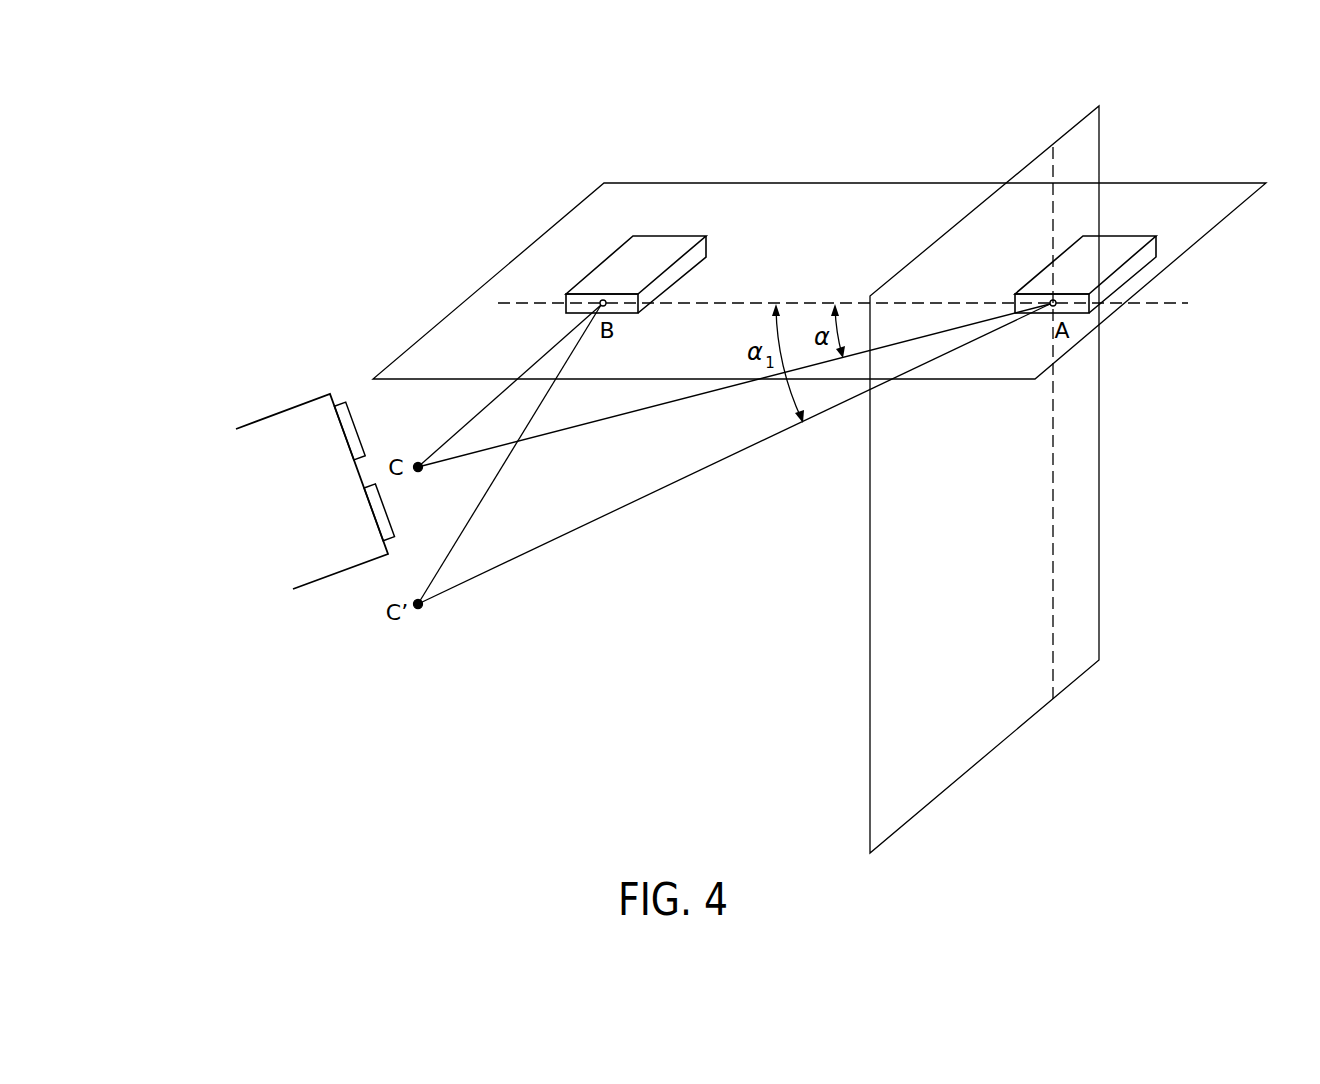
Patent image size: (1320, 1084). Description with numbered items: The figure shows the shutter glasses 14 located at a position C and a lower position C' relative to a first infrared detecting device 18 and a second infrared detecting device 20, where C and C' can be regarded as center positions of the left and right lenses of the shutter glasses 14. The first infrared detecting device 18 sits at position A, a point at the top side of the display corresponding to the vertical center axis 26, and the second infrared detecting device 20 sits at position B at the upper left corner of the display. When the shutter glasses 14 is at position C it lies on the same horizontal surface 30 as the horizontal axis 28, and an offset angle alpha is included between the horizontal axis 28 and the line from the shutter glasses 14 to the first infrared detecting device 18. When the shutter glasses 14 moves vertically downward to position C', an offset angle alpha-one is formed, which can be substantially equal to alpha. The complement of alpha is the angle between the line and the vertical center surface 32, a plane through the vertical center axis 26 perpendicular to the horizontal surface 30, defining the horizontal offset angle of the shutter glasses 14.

The shutter glasses 14 is at (232, 491).
The first infrared detecting device 18 is at (1116, 243).
The second infrared detecting device 20 is at (660, 243).
The vertical center axis 26 is at (1053, 650).
The horizontal axis 28 is at (1190, 303).
The horizontal surface 30 is at (1228, 183).
The vertical center surface 32 is at (1100, 462).